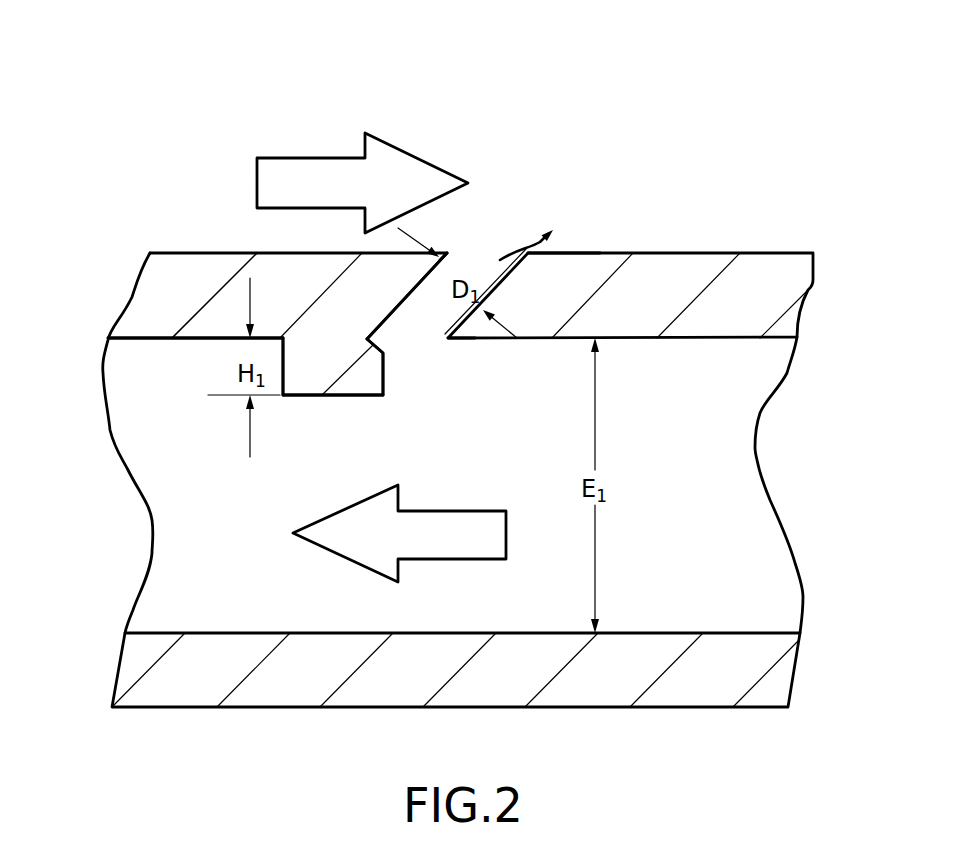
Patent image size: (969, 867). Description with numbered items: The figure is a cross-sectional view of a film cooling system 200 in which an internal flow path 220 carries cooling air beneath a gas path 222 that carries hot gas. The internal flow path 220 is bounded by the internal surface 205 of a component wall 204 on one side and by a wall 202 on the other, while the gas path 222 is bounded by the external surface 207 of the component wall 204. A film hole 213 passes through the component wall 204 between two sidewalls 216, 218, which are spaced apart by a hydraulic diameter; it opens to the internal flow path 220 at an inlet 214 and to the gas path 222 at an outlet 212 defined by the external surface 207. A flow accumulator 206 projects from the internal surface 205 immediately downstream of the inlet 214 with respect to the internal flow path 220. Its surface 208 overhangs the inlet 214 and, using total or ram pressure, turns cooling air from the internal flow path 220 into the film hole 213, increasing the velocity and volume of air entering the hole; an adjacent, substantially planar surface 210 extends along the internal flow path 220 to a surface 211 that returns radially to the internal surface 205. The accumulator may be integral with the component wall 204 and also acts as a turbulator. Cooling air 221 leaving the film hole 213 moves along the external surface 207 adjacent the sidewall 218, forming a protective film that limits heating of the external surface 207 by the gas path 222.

The film cooling system 200 is at (131, 95).
The wall 202 is at (173, 707).
The component wall 204 is at (138, 310).
The internal surface 205 is at (133, 340).
The flow accumulator 206 is at (305, 355).
The external surface 207 is at (698, 253).
The surface of flow accumulator 208 is at (383, 372).
The surface of flow accumulator 210 is at (338, 395).
The surface of flow accumulator 211 is at (278, 367).
The outlet 212 is at (492, 253).
The film hole 213 is at (425, 310).
The inlet 214 is at (417, 343).
The sidewall 216 is at (427, 277).
The sidewall 218 is at (505, 270).
The internal flow path 220 is at (440, 542).
The cooling air 221 is at (560, 252).
The gas path 222 is at (313, 158).